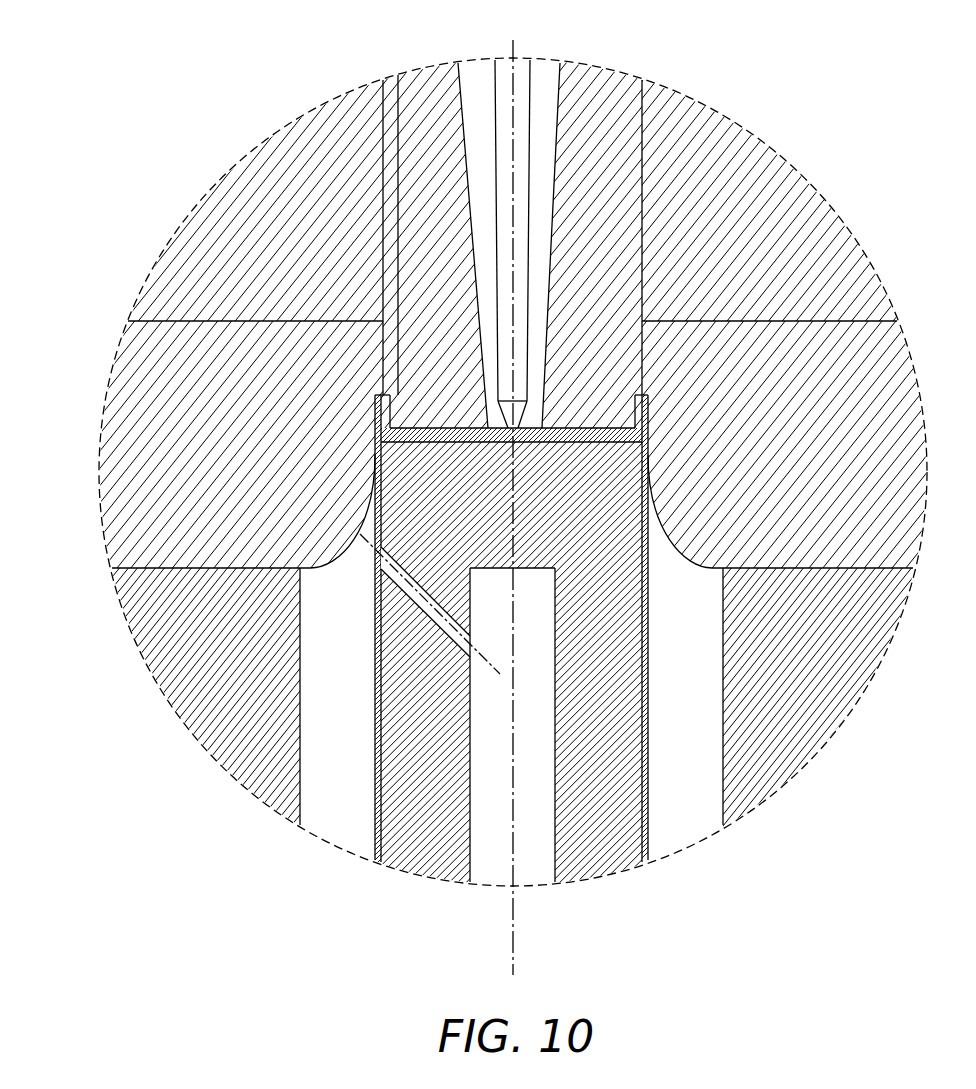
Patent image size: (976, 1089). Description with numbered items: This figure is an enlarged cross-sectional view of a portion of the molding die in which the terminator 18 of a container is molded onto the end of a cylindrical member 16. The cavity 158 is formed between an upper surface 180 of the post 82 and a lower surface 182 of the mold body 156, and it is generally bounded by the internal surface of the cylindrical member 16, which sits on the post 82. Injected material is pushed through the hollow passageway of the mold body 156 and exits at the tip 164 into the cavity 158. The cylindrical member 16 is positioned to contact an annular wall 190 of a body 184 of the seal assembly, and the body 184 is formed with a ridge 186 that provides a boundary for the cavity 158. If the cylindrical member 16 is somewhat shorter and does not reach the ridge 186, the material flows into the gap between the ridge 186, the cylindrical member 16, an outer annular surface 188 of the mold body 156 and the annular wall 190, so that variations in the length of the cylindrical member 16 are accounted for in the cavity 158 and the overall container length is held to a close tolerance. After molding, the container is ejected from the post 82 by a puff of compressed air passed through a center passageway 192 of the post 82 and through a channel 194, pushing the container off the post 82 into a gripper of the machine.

The cylindrical member 16 is at (650, 837).
The terminator 18 is at (448, 480).
The post 82 is at (600, 863).
The mold body 156 is at (653, 140).
The cavity 158 is at (664, 422).
The tip 164 is at (538, 413).
The upper surface 180 is at (576, 447).
The lower surface 182 is at (398, 75).
The body 184 is at (155, 475).
The ridge 186 is at (374, 372).
The outer annular surface 188 is at (640, 386).
The annular wall 190 is at (360, 449).
The center passageway 192 is at (500, 873).
The channel 194 is at (425, 598).